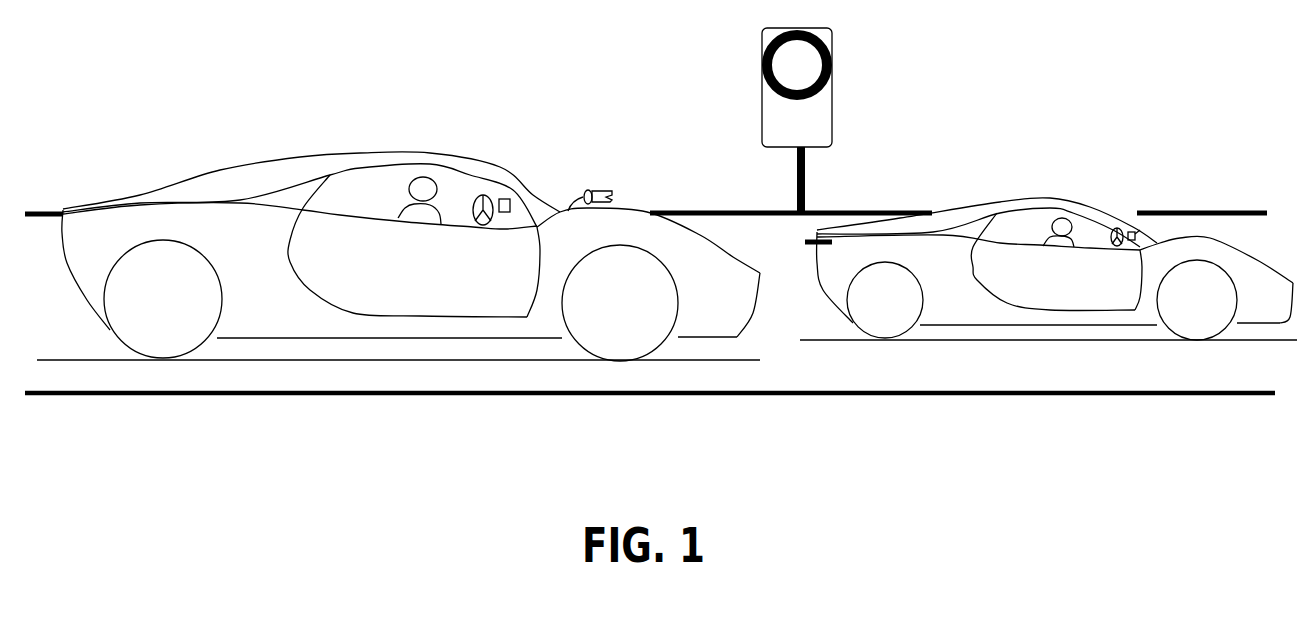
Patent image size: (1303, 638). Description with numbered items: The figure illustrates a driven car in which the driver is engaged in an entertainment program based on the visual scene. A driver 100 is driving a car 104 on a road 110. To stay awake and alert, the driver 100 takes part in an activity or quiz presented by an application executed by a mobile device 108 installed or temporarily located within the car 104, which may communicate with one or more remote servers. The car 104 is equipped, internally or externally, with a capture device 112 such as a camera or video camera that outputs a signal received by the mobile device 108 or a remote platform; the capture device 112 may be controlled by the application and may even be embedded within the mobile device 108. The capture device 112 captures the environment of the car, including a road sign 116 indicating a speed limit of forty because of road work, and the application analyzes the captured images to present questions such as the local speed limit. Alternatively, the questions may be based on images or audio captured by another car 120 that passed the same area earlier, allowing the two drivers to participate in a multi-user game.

The driver 100 is at (398, 216).
The car 104 is at (488, 169).
The mobile device 108 is at (510, 202).
The road 110 is at (808, 391).
The capture device 112 is at (603, 191).
The road sign 116 is at (828, 36).
The another car 120 is at (1124, 211).